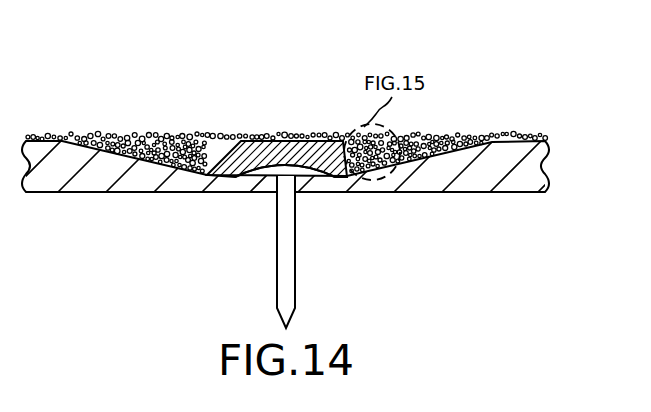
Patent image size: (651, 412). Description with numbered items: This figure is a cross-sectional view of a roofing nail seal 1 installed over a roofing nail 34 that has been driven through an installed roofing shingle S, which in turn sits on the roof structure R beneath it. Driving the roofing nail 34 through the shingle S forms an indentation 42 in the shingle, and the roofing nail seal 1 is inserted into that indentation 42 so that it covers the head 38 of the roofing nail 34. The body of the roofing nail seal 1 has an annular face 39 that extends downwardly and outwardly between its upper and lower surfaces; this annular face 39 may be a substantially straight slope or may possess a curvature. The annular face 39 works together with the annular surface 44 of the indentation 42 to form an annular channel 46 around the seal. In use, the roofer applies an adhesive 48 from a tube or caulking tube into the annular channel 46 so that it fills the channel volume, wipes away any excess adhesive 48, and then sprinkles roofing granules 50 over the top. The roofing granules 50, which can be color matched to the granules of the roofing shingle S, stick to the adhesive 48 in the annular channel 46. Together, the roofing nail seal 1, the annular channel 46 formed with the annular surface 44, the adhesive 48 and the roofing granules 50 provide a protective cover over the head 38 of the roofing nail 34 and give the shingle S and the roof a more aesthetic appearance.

The roofing nail seal 1 is at (290, 179).
The roofing nail 34 is at (277, 243).
The head 38 is at (305, 179).
The annular face 39 is at (243, 140).
The indentation 42 is at (178, 140).
The annular surface 44 is at (478, 140).
The annular channel 46 is at (222, 140).
The adhesive 48 is at (119, 139).
The roofing granules 50 is at (165, 140).
The roof deck R is at (403, 193).
The roofing shingle S is at (485, 177).